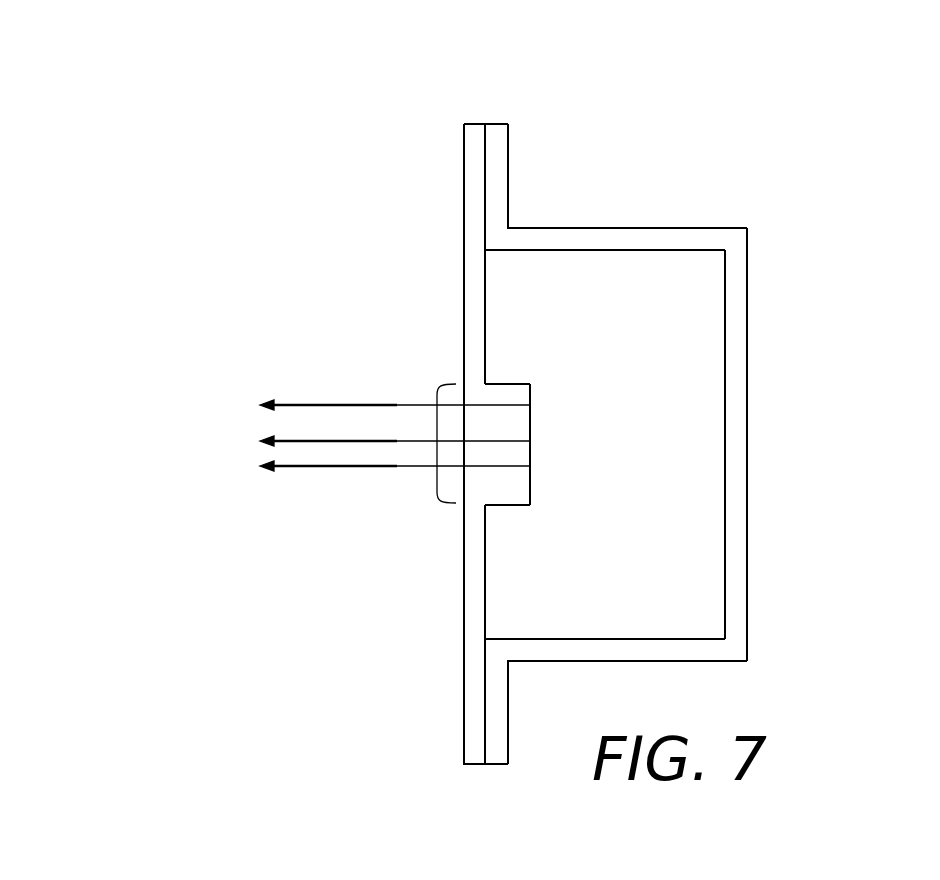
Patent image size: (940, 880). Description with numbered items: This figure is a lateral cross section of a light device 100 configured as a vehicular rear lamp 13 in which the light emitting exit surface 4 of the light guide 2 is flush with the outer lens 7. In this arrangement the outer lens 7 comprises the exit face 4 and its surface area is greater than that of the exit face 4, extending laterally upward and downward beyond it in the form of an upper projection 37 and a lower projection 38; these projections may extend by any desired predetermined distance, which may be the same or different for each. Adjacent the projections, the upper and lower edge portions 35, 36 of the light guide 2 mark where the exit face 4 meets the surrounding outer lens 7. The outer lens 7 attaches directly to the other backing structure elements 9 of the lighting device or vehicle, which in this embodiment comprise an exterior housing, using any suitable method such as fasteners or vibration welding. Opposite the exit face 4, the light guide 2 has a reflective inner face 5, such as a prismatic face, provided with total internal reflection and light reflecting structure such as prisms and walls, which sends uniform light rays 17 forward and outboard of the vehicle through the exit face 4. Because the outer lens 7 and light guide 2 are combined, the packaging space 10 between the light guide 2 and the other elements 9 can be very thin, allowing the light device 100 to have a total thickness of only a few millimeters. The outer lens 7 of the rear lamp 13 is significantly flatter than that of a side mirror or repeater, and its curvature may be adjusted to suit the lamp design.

The light device 100 is at (636, 104).
The light guide 2 is at (507, 393).
The reflective inner face 5 is at (530, 418).
The packaging space 10 is at (573, 462).
The other backing structure elements 9 is at (748, 497).
The window upper edge 35 is at (498, 385).
The window lower edge 36 is at (507, 510).
The upper projection 37 is at (473, 272).
The lower projection 38 is at (475, 605).
The rear lamp 13 is at (455, 298).
The outer lens 7 is at (460, 333).
The light rays 17 is at (313, 467).
The light emitting exit surface 4 is at (437, 483).